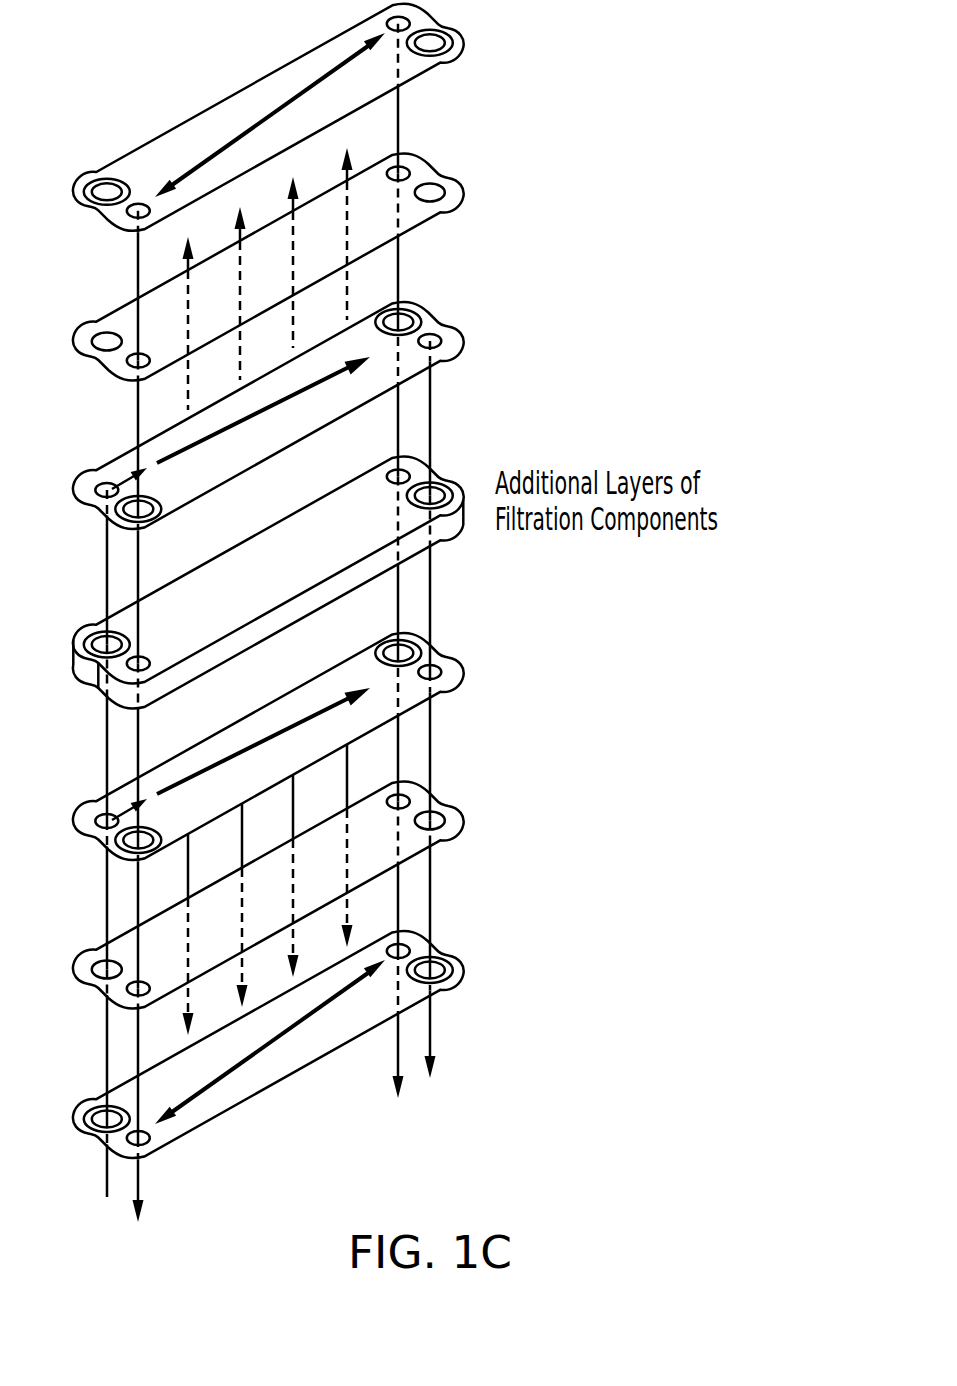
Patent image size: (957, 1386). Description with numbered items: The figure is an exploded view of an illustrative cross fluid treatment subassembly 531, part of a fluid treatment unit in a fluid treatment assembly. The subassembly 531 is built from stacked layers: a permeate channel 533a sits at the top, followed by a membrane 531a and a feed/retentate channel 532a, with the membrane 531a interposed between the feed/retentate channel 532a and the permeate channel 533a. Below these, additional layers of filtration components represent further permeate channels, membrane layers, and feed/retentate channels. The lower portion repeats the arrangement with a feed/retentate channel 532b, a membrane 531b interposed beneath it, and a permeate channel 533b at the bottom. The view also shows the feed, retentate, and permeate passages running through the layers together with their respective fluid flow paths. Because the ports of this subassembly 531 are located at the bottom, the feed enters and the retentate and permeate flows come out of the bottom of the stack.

The cross fluid treatment subassembly 531 is at (80, 92).
The permeate channel 533a is at (411, 117).
The membrane 531a is at (401, 266).
The feed/retentate channel 532a is at (439, 415).
The feed/retentate channel 532b is at (438, 746).
The membrane 531b is at (401, 894).
The permeate channel 533b is at (411, 1044).